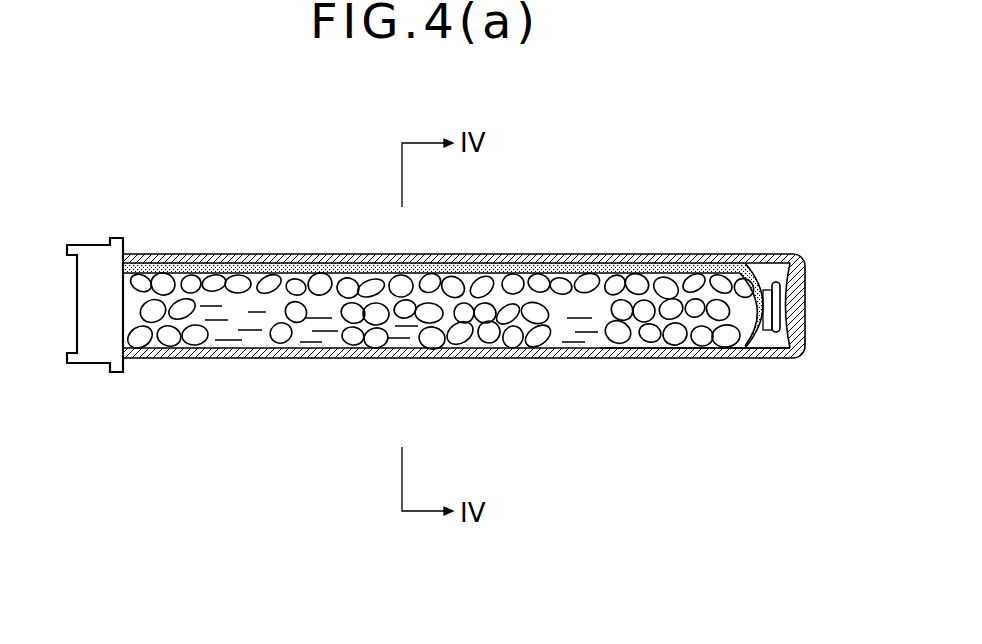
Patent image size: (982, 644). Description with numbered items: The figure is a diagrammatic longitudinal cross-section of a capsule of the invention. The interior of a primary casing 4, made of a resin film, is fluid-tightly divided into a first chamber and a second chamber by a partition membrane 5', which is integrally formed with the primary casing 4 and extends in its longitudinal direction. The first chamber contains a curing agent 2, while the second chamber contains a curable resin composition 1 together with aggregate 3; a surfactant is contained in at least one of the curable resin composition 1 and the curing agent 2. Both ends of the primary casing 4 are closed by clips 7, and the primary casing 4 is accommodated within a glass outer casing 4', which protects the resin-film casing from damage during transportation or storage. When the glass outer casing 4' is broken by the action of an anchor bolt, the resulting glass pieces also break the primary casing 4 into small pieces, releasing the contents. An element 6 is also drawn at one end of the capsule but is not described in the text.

The active material with electrolyte 1 is at (225, 338).
The separator 2 is at (125, 268).
The casing 3 is at (505, 335).
The casing end portion 4 is at (695, 396).
The end closure 4' is at (817, 291).
The separator end portion 5' is at (739, 269).
The cap 6 is at (98, 263).
The terminal 7 is at (767, 292).